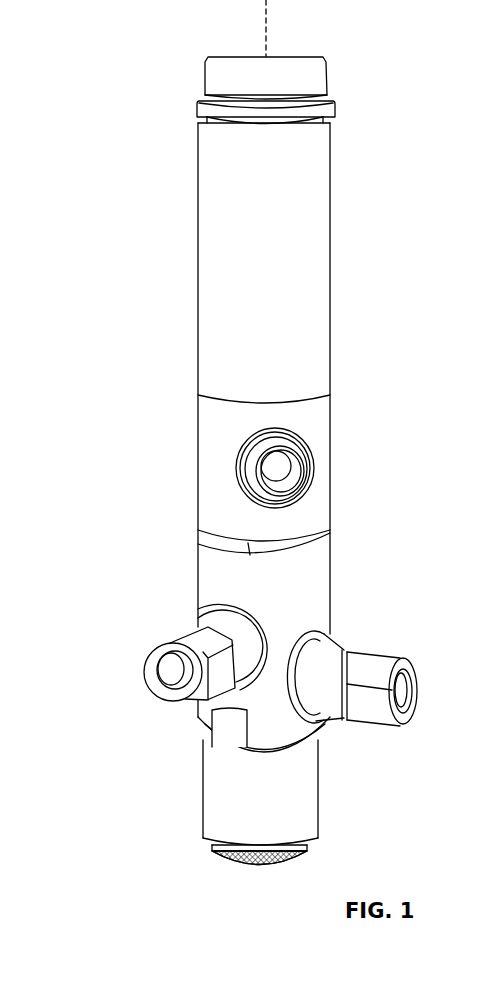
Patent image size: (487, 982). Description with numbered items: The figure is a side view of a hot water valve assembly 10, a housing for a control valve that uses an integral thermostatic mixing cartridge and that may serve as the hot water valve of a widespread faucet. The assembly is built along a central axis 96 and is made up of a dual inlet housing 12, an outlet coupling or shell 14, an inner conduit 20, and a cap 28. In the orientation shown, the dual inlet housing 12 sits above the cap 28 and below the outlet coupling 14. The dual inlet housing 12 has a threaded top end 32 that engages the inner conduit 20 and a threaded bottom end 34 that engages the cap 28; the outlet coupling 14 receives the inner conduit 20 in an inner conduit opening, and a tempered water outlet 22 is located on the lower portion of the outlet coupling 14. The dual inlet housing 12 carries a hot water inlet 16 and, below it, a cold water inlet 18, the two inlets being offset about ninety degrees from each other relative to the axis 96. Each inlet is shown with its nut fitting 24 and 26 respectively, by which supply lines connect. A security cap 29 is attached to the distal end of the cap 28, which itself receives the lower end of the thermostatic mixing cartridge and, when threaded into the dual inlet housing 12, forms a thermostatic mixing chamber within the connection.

The hot water valve assembly 10 is at (164, 48).
The axis 96 is at (268, 36).
The dual inlet housing 12 is at (203, 565).
The outlet coupling 14 is at (210, 443).
The tempered water outlet 22 is at (310, 480).
The inner conduit 20 is at (323, 540).
The top end 32 is at (245, 537).
The nut 24 is at (193, 637).
The hot water inlet 16 is at (172, 676).
The nut 26 is at (375, 657).
The cold water inlet 18 is at (408, 722).
The bottom end 34 is at (210, 748).
The cap 28 is at (266, 838).
The security cap 29 is at (240, 866).